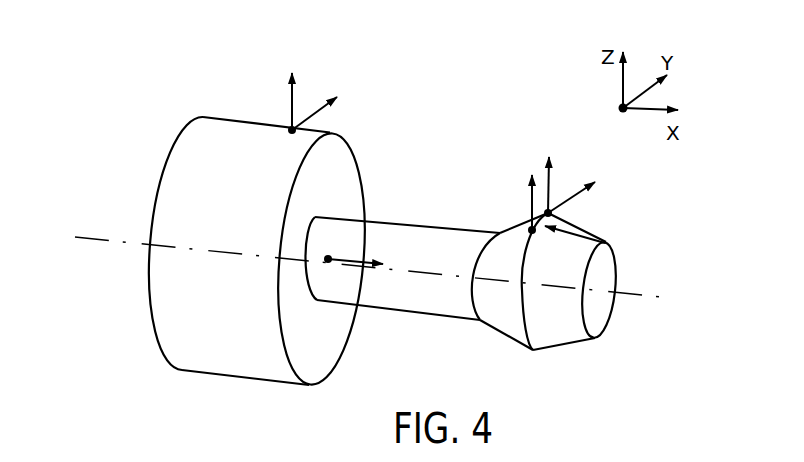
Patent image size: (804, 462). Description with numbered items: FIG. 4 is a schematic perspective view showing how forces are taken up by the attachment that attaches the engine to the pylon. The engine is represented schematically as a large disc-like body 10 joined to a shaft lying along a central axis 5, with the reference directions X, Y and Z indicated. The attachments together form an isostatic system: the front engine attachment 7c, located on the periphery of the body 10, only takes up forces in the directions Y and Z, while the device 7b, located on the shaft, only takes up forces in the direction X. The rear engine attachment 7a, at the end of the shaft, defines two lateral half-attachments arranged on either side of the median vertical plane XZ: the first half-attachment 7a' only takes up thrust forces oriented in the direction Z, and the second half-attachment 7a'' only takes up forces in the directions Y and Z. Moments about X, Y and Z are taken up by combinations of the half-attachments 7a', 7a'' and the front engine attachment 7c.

The rotor disk / wheel 10 is at (145, 333).
The axis of rotation 5 is at (647, 297).
The rear engine attachment 7a is at (596, 281).
The first half-attachment 7a' is at (478, 204).
The second half-attachment 7a'' is at (615, 200).
The device 7b is at (328, 259).
The front engine attachment 7c is at (290, 128).